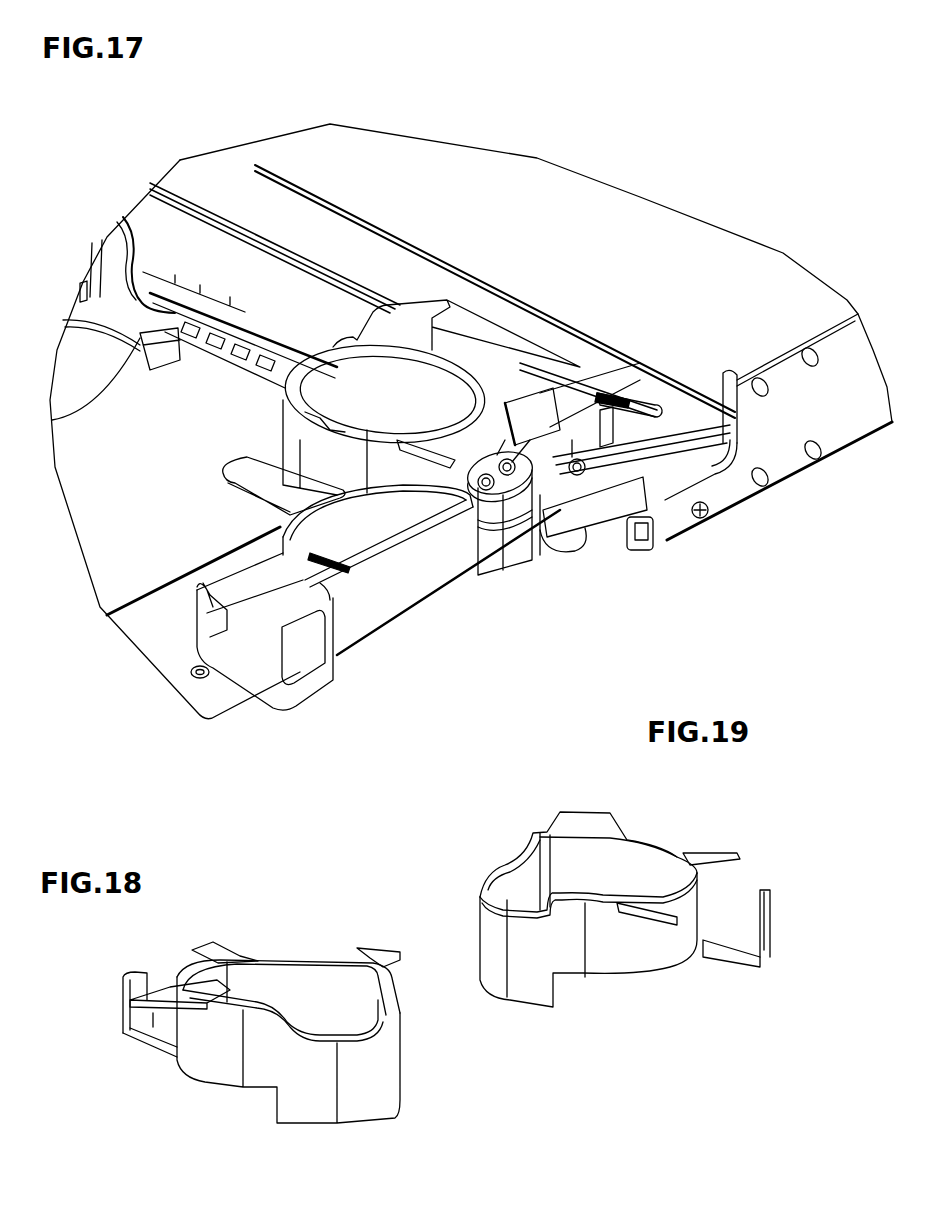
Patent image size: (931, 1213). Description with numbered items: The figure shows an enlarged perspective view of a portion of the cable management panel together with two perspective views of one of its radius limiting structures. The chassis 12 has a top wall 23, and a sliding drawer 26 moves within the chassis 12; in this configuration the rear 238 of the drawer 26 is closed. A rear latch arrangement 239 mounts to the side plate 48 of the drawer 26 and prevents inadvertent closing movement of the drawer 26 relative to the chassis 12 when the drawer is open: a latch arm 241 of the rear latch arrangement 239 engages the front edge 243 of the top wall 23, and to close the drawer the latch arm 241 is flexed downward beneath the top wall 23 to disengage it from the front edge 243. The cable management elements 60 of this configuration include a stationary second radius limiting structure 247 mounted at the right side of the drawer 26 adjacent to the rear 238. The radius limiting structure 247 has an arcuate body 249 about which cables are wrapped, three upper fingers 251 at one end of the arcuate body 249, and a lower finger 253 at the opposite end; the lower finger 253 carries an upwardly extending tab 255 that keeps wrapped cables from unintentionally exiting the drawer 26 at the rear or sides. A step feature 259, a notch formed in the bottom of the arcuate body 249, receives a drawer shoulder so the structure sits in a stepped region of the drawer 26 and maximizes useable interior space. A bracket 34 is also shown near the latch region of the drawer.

In FIG. 17, the chassis 12 is at (572, 188).
In FIG. 17, the top wall 23 is at (702, 251).
In FIG. 17, the rear 238 is at (273, 262).
In FIG. 17, the cable management elements 60 is at (262, 421).
In FIG. 17, the side plate 48 is at (166, 612).
In FIG. 17, the second radius limiting structure 247 is at (406, 312).
In FIG. 18, the second radius limiting structure 247 is at (137, 1109).
In FIG. 19, the second radius limiting structure 247 is at (724, 993).
In FIG. 17, the latch arm 241 is at (507, 403).
In FIG. 17, the front edge 243 is at (650, 397).
In FIG. 17, the upwardly extending tab 255 is at (553, 458).
In FIG. 18, the upwardly extending tab 255 is at (137, 970).
In FIG. 19, the upwardly extending tab 255 is at (773, 920).
In FIG. 17, the rear latch arrangement 239 is at (543, 550).
In FIG. 17, the bracket 34 is at (647, 540).
In FIG. 17, the sliding drawer 26 is at (372, 664).
In FIG. 18, the arcuate body 249 is at (377, 1070).
In FIG. 19, the arcuate body 249 is at (620, 963).
In FIG. 18, the upper fingers 251 is at (163, 990).
In FIG. 19, the upper fingers 251 is at (573, 823).
In FIG. 18, the lower finger 253 is at (143, 1043).
In FIG. 19, the lower finger 253 is at (743, 967).
In FIG. 18, the step feature 259 is at (247, 1117).
In FIG. 19, the step feature 259 is at (595, 1011).